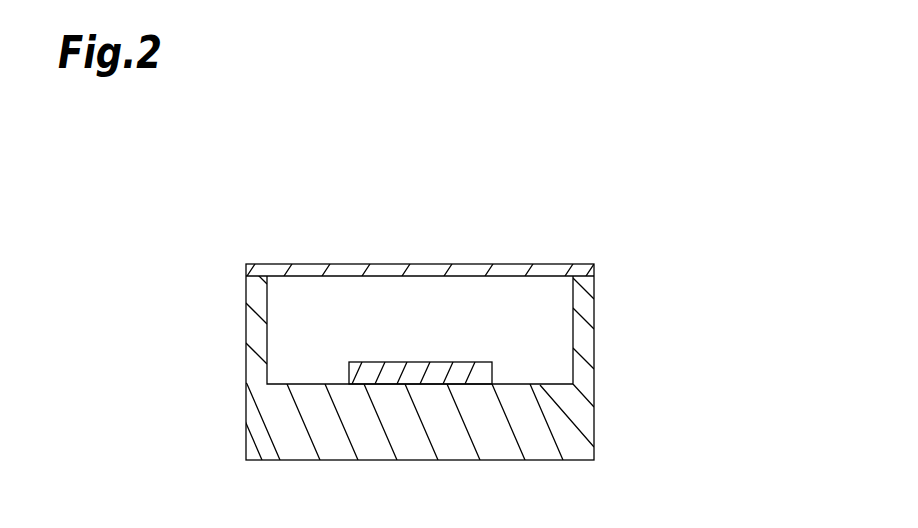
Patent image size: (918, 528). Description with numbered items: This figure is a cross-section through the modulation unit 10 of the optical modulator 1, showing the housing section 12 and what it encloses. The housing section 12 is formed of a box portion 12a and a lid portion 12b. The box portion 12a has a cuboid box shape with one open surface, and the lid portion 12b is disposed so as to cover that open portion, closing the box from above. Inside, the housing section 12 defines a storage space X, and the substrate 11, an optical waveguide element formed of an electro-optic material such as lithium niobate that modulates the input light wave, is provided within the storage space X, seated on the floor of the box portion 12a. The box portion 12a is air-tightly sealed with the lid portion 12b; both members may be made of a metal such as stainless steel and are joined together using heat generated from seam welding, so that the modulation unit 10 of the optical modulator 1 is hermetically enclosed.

The optical modulator 1 is at (697, 124).
The modulation unit 10 is at (215, 258).
The substrate 11 is at (420, 370).
The housing section 12 is at (596, 337).
The box portion 12a is at (578, 423).
The lid portion 12b is at (483, 268).
The storage space X is at (411, 296).